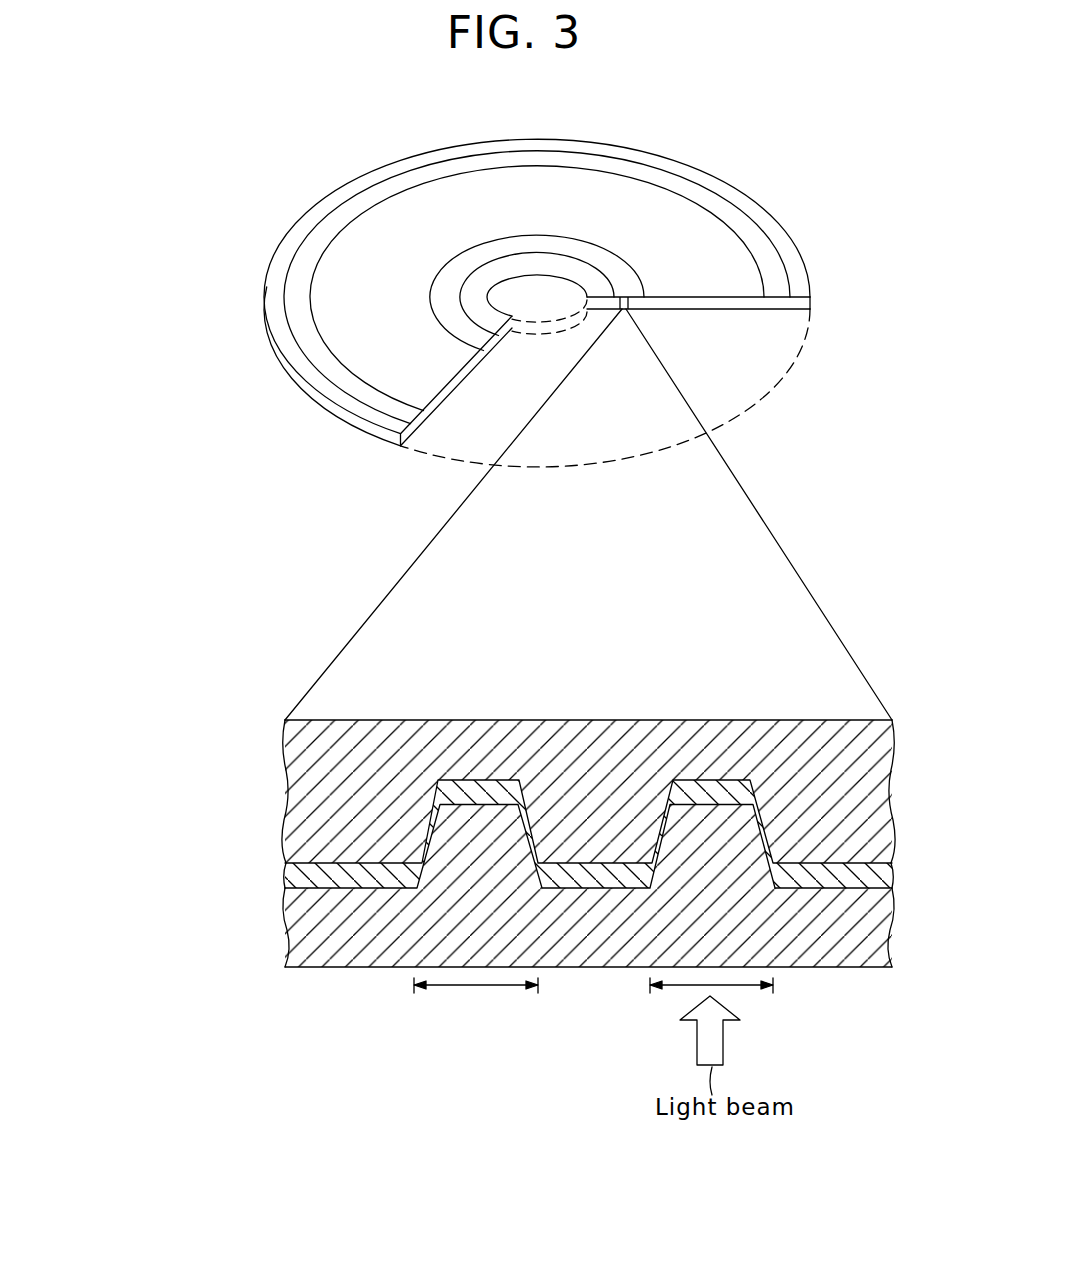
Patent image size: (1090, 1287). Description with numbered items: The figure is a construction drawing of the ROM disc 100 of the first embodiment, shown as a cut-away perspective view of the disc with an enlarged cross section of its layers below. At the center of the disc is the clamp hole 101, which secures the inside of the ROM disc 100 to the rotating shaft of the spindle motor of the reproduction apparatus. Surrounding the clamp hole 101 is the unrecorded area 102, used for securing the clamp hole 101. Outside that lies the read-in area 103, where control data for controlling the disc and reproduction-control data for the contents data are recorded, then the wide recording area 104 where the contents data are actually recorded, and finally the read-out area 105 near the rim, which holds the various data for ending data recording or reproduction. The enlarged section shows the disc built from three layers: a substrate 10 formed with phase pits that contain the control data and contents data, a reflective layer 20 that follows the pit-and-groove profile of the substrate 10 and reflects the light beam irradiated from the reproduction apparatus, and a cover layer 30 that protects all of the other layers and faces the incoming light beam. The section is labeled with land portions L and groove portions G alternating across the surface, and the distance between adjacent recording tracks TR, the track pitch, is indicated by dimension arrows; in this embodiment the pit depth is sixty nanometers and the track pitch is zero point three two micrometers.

The ROM disc 100 is at (699, 170).
The clamp hole 101 is at (517, 312).
The unrecorded area 102 is at (536, 258).
The read-in area 103 is at (447, 283).
The recording area 104 is at (673, 278).
The read-out area 105 is at (764, 258).
The substrate 10 is at (302, 768).
The reflective layer 20 is at (298, 878).
The cover layer 30 is at (304, 953).
The land L is at (348, 862).
The groove G is at (479, 786).
The recording tracks TR is at (482, 992).